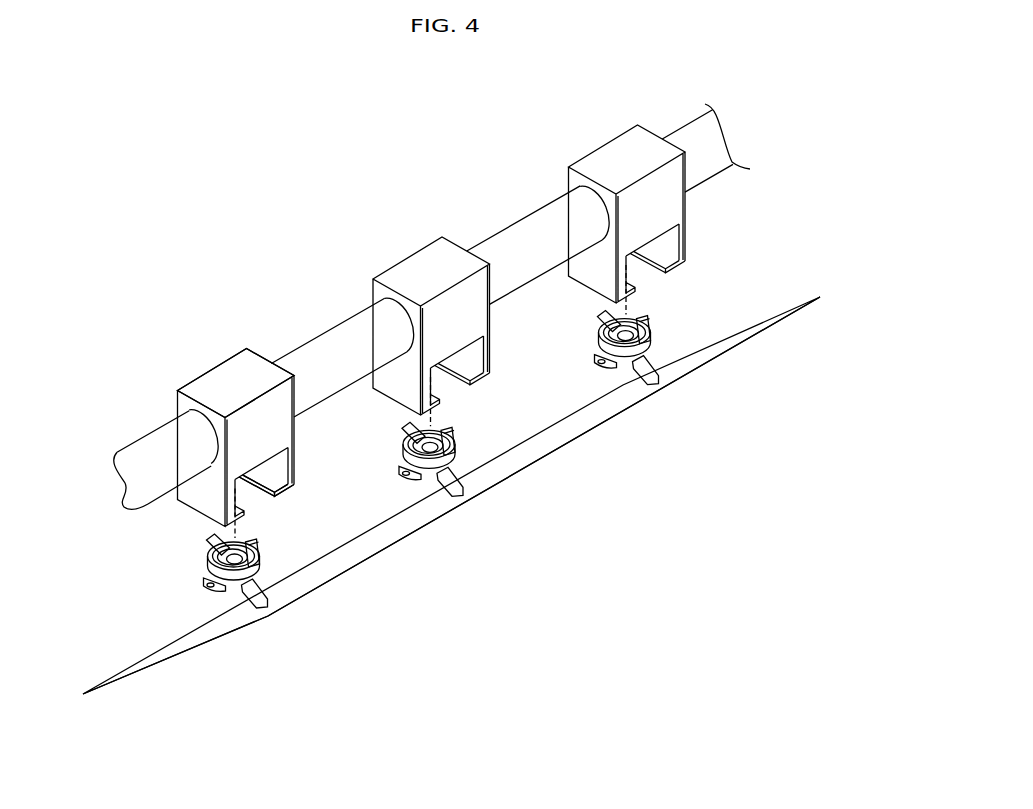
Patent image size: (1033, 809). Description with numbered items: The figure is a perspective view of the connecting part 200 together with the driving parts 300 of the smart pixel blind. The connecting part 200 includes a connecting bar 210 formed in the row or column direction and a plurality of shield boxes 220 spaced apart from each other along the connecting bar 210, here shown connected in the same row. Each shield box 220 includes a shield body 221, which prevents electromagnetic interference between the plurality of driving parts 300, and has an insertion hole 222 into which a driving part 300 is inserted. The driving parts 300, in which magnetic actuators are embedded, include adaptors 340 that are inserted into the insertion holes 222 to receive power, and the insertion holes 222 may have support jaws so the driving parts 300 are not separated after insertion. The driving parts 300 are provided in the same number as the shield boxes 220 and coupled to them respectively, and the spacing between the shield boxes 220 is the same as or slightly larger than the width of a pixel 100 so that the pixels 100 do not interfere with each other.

The pixel 100 is at (195, 640).
The connecting part 200 is at (437, 200).
The connecting bar 210 is at (533, 230).
The shield box 220 is at (199, 360).
The shield body 221 is at (260, 368).
The insertion hole 222 is at (275, 490).
The driving part 300 is at (269, 628).
The adaptor 340 is at (204, 579).